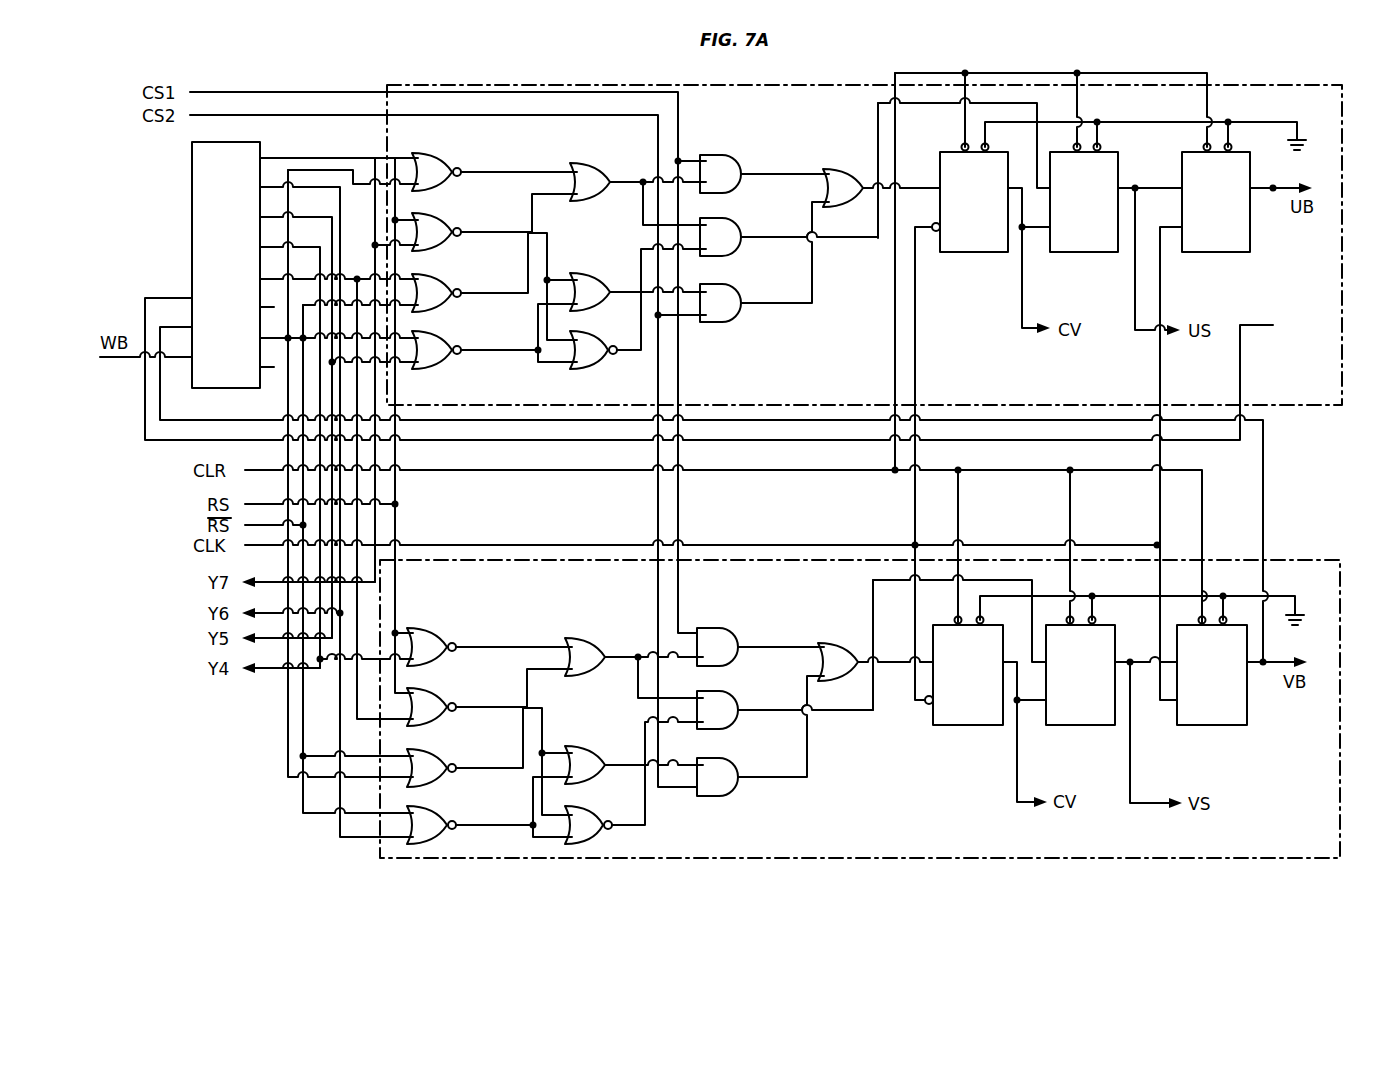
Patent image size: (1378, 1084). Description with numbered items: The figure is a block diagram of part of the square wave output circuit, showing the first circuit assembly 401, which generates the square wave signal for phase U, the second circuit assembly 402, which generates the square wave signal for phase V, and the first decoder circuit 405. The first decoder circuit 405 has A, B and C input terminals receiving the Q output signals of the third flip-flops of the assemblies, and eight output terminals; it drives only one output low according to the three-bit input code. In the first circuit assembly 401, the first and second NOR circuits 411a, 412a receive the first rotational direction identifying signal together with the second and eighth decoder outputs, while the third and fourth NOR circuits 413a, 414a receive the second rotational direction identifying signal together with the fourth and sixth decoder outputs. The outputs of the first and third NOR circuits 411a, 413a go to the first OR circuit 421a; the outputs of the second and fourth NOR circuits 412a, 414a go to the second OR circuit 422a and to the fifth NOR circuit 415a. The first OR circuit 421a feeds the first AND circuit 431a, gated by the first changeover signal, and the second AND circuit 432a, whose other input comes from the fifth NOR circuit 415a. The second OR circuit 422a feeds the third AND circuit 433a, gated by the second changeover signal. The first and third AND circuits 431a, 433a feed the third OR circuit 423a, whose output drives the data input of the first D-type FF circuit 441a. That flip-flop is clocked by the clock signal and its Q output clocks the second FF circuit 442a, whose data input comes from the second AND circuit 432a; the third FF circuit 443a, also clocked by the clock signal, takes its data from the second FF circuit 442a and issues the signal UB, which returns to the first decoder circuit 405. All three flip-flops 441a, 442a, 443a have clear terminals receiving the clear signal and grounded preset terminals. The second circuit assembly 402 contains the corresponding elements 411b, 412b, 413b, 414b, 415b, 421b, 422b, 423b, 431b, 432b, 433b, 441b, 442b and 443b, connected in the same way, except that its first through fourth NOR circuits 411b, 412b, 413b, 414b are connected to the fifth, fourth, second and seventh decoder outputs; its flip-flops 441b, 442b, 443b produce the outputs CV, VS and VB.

The first circuit assembly 401 is at (1300, 85).
The second circuit assembly 402 is at (1300, 560).
The first decoder circuit 405 is at (192, 192).
The first NOR circuit 411a is at (440, 156).
The second NOR circuit 412a is at (440, 216).
The third NOR circuit 413a is at (440, 276).
The fourth NOR circuit 414a is at (440, 334).
The fifth NOR circuit 415a is at (578, 332).
The first OR circuit 421a is at (578, 167).
The second OR circuit 422a is at (578, 274).
The third OR circuit 423a is at (863, 172).
The first AND circuit 431a is at (717, 154).
The second AND circuit 432a is at (717, 216).
The third AND circuit 433a is at (717, 282).
The first D-type FF circuit 441a is at (972, 252).
The second D-type FF circuit 442a is at (1082, 252).
The third D-type FF circuit 443a is at (1214, 252).
The first NOR circuit 411b is at (437, 632).
The second NOR circuit 412b is at (437, 692).
The third NOR circuit 413b is at (437, 752).
The fourth NOR circuit 414b is at (437, 810).
The fifth NOR circuit 415b is at (572, 807).
The first OR circuit 421b is at (573, 647).
The second OR circuit 422b is at (572, 752).
The third OR circuit 423b is at (858, 647).
The first AND circuit 431b is at (710, 628).
The second AND circuit 432b is at (710, 691).
The third AND circuit 433b is at (710, 756).
The first D-type FF circuit 441b is at (966, 725).
The second D-type FF circuit 442b is at (1078, 725).
The third D-type FF circuit 443b is at (1210, 725).